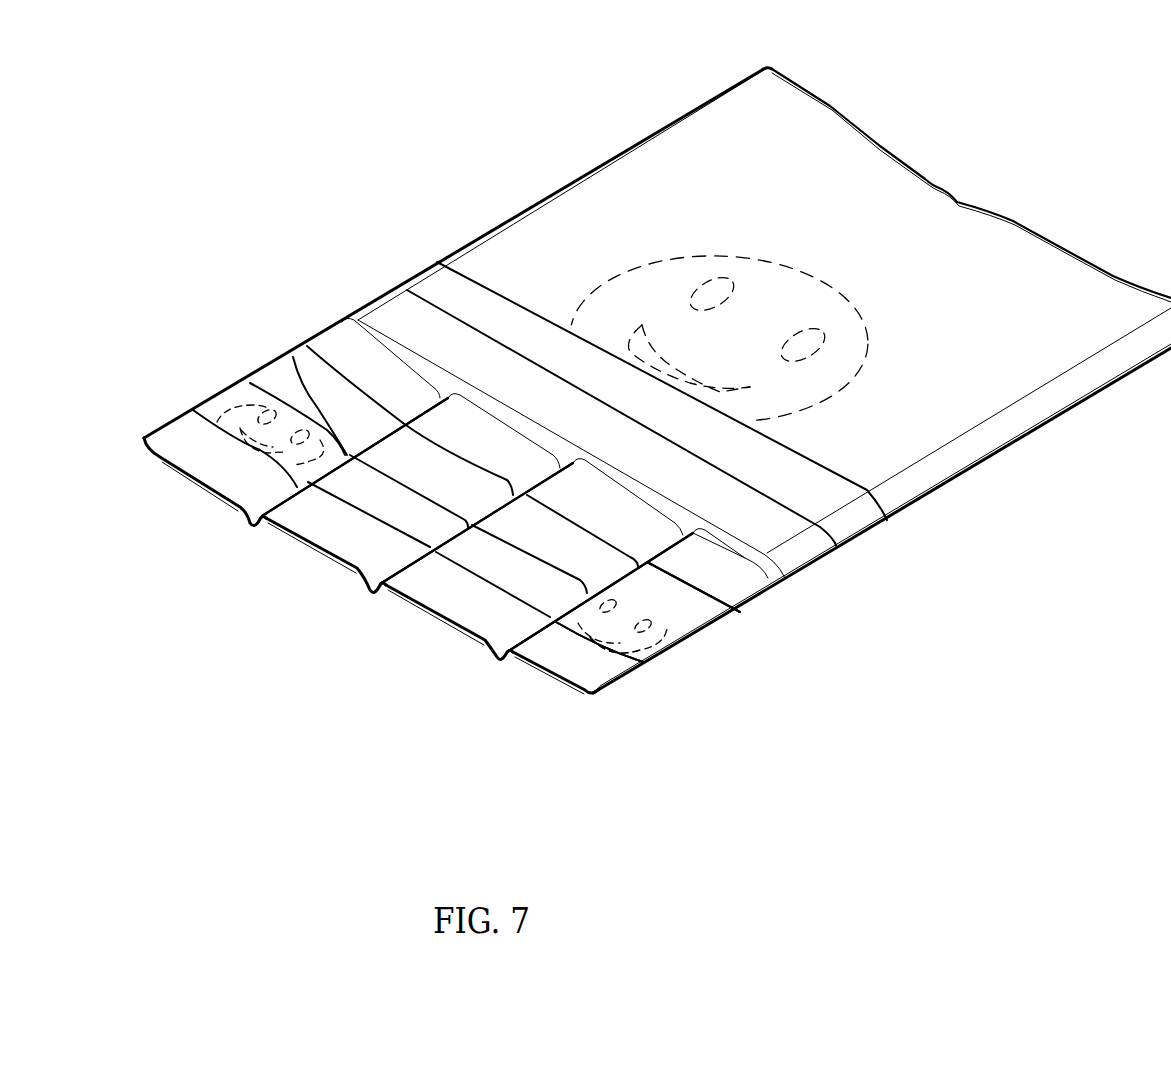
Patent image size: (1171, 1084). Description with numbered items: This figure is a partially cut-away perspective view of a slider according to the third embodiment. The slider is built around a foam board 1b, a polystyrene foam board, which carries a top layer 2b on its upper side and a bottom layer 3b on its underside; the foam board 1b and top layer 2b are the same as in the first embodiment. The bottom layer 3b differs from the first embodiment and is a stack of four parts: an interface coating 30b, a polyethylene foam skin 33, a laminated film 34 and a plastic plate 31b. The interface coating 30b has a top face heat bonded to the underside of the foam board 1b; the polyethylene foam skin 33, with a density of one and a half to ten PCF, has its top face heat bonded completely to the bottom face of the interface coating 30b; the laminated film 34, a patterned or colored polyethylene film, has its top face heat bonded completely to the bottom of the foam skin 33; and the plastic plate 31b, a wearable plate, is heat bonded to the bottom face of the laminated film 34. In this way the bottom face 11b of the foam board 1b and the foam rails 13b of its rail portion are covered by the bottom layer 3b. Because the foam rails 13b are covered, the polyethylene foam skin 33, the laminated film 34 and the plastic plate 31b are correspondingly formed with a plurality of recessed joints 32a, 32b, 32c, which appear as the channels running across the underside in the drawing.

The foam board 1b is at (397, 318).
The top layer 2b is at (522, 200).
The bottom layer 3b is at (717, 828).
The bottom face 11b is at (778, 581).
The foam rails 13b is at (437, 392).
The interface coating 30b is at (747, 583).
The plastic plate 31b is at (600, 673).
The recessed joint 32a is at (370, 592).
The recessed joint 32b is at (538, 612).
The recessed joint 32c is at (276, 366).
The polyethylene foam skin 33 is at (690, 613).
The laminated film 34 is at (653, 661).